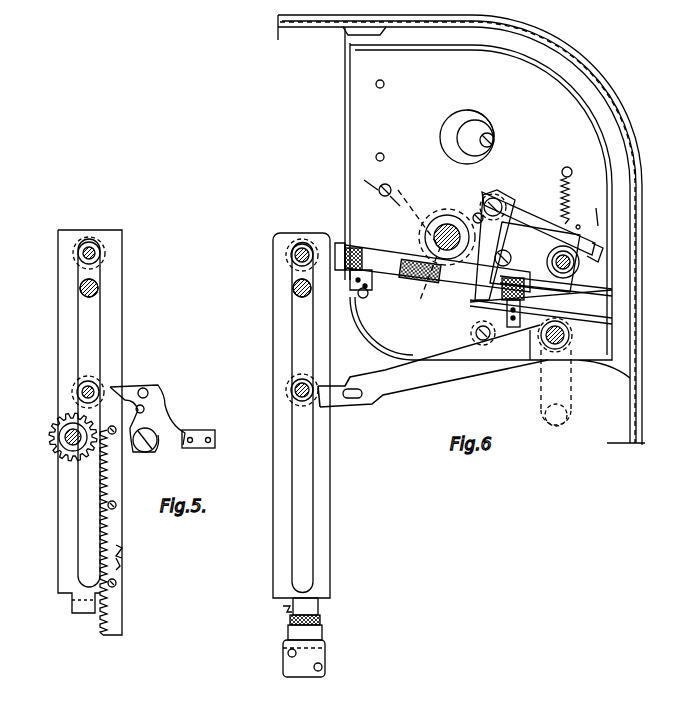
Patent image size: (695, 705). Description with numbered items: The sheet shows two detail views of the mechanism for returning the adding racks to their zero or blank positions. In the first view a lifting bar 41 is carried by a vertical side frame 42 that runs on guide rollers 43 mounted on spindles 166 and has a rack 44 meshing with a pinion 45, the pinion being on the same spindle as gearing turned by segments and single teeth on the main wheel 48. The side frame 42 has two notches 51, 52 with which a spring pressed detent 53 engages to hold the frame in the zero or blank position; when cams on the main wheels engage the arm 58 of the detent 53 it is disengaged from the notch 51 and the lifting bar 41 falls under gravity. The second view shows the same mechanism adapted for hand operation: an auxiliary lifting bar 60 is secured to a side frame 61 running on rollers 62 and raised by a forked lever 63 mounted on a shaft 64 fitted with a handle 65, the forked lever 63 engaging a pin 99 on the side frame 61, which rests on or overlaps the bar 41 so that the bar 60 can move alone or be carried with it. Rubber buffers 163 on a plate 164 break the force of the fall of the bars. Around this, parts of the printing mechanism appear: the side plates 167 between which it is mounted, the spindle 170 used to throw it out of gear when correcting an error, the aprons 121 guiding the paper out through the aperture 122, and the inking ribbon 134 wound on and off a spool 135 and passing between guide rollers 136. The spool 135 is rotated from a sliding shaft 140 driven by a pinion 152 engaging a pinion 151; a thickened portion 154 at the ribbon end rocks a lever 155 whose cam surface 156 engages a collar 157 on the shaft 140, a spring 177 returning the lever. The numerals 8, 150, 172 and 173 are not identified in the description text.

In FIG. 6, the frame rim 8 is at (445, 30).
In FIG. 5, the lifting bar 41 is at (84, 608).
In FIG. 6, the lifting bar 41 is at (283, 608).
In FIG. 5, the side frames 42 is at (113, 320).
In FIG. 5, the guide rollers 43 is at (90, 242).
In FIG. 5, the racks 44 is at (114, 487).
In FIG. 5, the pinions 45 is at (60, 455).
In FIG. 6, the main wheel 48 is at (387, 193).
In FIG. 5, the notch 51 is at (120, 569).
In FIG. 5, the notch 52 is at (122, 552).
In FIG. 5, the detent 53 is at (155, 416).
In FIG. 5, the arm 58 is at (143, 388).
In FIG. 6, the auxiliary lifting bar 60 is at (320, 608).
In FIG. 6, the side frames 61 is at (274, 332).
In FIG. 6, the rollers 62 is at (300, 242).
In FIG. 6, the forked levers 63 is at (420, 378).
In FIG. 6, the shaft 64 is at (560, 348).
In FIG. 6, the handle 65 is at (540, 395).
In FIG. 6, the pins 99 is at (350, 398).
In FIG. 6, the aprons 121 is at (347, 127).
In FIG. 6, the aperture 122 is at (383, 30).
In FIG. 6, the inking ribbon 134 is at (392, 262).
In FIG. 6, the spool 135 is at (585, 315).
In FIG. 6, the guide rollers 136 is at (346, 246).
In FIG. 6, the shaft 140 is at (562, 278).
In FIG. 6, the roller 150 is at (438, 205).
In FIG. 6, the pinion 151 is at (540, 220).
In FIG. 6, the pinion 152 is at (590, 280).
In FIG. 6, the thickened portion 154 is at (505, 298).
In FIG. 6, the rocking lever 155 is at (500, 208).
In FIG. 6, the cam surface 156 is at (596, 222).
In FIG. 6, the collar 157 is at (538, 252).
In FIG. 6, the buffers 163 is at (312, 622).
In FIG. 6, the plate 164 is at (320, 660).
In FIG. 5, the spindles 166 is at (100, 253).
In FIG. 6, the spindles 166 is at (298, 258).
In FIG. 6, the side plates 167 is at (490, 211).
In FIG. 6, the spindle 170 is at (495, 138).
In FIG. 6, the ring 172 is at (463, 118).
In FIG. 6, the bearing ring 173 is at (444, 132).
In FIG. 6, the spring 177 is at (560, 175).